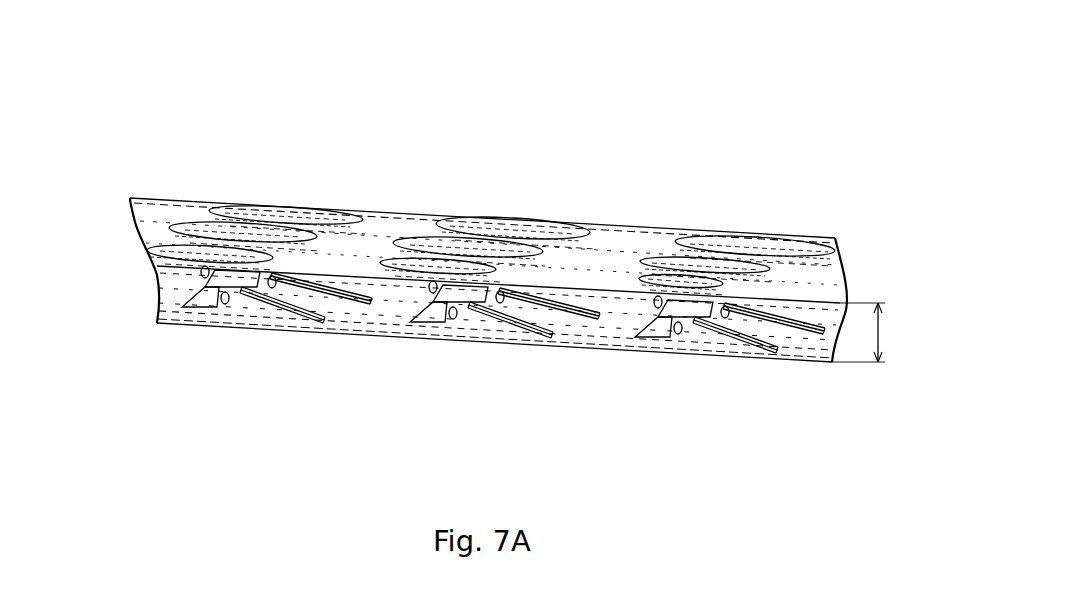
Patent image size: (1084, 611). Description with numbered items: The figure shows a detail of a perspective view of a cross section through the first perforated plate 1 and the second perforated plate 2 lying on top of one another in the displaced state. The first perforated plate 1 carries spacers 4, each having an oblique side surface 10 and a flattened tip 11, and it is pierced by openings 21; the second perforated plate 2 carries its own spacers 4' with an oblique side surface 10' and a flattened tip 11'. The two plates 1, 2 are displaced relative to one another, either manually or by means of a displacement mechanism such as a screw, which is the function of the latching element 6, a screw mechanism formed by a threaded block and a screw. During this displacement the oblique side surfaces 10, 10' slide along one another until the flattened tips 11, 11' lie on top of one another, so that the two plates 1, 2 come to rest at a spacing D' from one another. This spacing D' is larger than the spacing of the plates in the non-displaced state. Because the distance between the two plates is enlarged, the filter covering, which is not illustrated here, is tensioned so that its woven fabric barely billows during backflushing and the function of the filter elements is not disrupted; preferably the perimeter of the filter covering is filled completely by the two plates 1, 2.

The first perforated plate 1 is at (180, 283).
The second perforated plate 2 is at (170, 215).
The spacer 4 is at (221, 336).
The spacer 4' is at (423, 351).
The latching element 6 is at (208, 296).
The oblique side surface 10 is at (396, 353).
The oblique side surface 10' is at (562, 363).
The flattened tip 11 is at (754, 368).
The flattened tip 11' is at (682, 361).
The opening 21 is at (603, 232).
The spacing D' is at (872, 332).